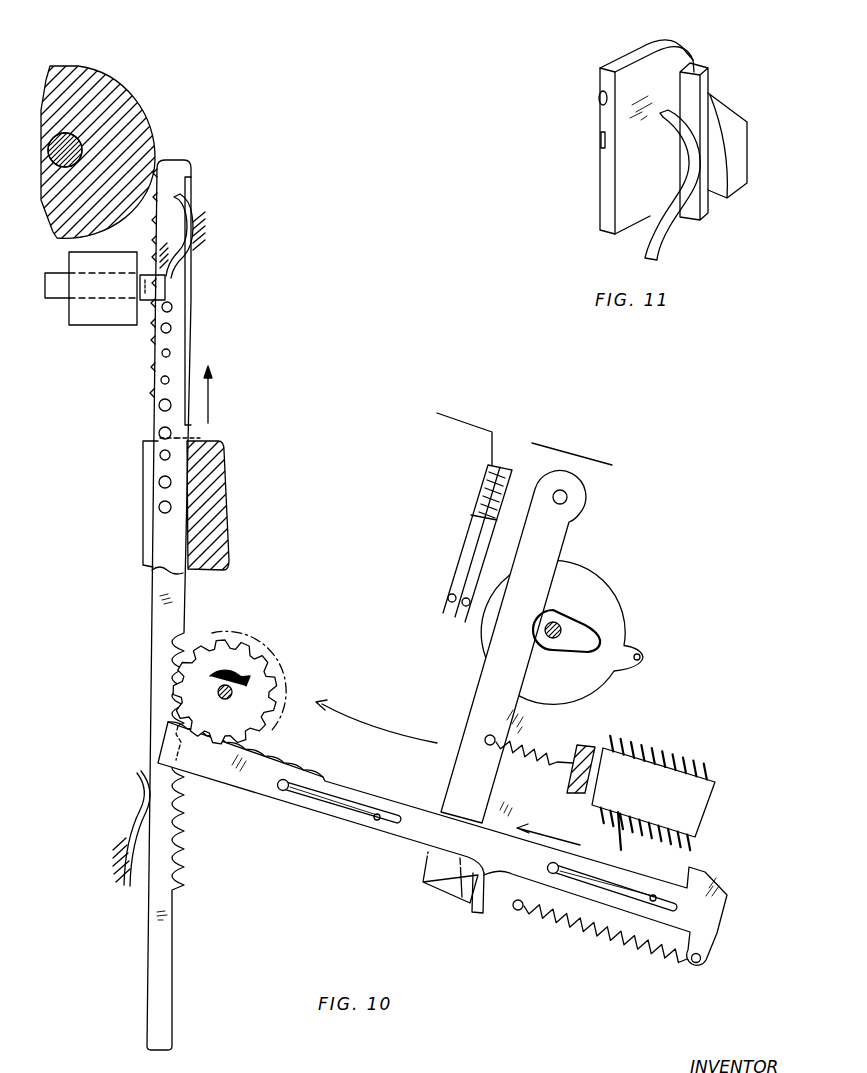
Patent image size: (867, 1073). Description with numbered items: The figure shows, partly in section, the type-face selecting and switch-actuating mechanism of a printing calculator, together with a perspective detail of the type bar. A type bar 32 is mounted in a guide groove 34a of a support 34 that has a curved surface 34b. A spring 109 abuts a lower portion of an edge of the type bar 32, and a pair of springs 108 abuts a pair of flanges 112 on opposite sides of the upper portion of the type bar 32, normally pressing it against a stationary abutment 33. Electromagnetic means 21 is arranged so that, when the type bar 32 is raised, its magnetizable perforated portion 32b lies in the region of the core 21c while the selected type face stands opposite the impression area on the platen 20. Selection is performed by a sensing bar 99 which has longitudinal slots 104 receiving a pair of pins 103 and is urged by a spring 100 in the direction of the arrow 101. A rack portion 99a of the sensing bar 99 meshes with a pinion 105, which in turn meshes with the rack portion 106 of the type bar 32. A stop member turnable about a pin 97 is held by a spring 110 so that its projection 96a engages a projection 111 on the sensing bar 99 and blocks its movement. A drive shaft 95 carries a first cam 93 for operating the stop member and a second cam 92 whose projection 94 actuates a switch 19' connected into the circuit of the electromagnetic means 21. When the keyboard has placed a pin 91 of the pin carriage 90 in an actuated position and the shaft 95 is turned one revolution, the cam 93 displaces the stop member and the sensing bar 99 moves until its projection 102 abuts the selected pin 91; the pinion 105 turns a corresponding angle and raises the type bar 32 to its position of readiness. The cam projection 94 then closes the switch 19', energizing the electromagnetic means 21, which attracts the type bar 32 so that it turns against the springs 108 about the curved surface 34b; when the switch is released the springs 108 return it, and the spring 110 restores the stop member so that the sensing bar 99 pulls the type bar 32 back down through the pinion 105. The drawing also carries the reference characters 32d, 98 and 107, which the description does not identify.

In FIG. 10, the switch 19' is at (458, 543).
In FIG. 10, the platen 20 is at (122, 98).
In FIG. 10, the electromagnetic means 21 is at (84, 328).
In FIG. 10, the core 21c is at (145, 303).
In FIG. 10, the type bar 32 is at (177, 168).
In FIG. 11, the type bar 32 is at (637, 47).
In FIG. 10, the magnetizable perforated portion 32b is at (173, 288).
In FIG. 11, the indicia marks 32d is at (598, 100).
In FIG. 10, the stationary abutment 33 is at (200, 233).
In FIG. 11, the stationary abutment 33 is at (738, 140).
In FIG. 10, the support 34 is at (225, 527).
In FIG. 10, the guide groove 34a is at (143, 464).
In FIG. 10, the curved surface 34b is at (200, 470).
In FIG. 10, the pin carriage 90 is at (700, 795).
In FIG. 10, the pin 91 is at (646, 755).
In FIG. 10, the second cam 92 is at (607, 592).
In FIG. 10, the first cam 93 is at (598, 630).
In FIG. 10, the projection 94 is at (644, 659).
In FIG. 10, the drive shaft 95 is at (560, 646).
In FIG. 10, the projection 96a is at (442, 897).
In FIG. 10, the pin 97 is at (568, 496).
In FIG. 10, the direction arrow 98 is at (398, 740).
In FIG. 10, the sensing bar 99 is at (385, 795).
In FIG. 10, the rack portion 99a is at (267, 748).
In FIG. 10, the spring 100 is at (605, 934).
In FIG. 10, the arrow 101 is at (560, 820).
In FIG. 10, the projection 102 is at (703, 880).
In FIG. 10, the pins 103 is at (283, 791).
In FIG. 10, the longitudinal slots 104 is at (380, 821).
In FIG. 10, the pinion 105 is at (262, 657).
In FIG. 10, the rack portion 106 is at (180, 867).
In FIG. 10, the direction arrow 107 is at (212, 402).
In FIG. 10, the springs 108 is at (176, 200).
In FIG. 11, the springs 108 is at (656, 253).
In FIG. 10, the spring 109 is at (137, 795).
In FIG. 10, the spring 110 is at (560, 733).
In FIG. 10, the projection 111 is at (478, 914).
In FIG. 10, the flanges 112 is at (192, 303).
In FIG. 11, the flanges 112 is at (698, 67).